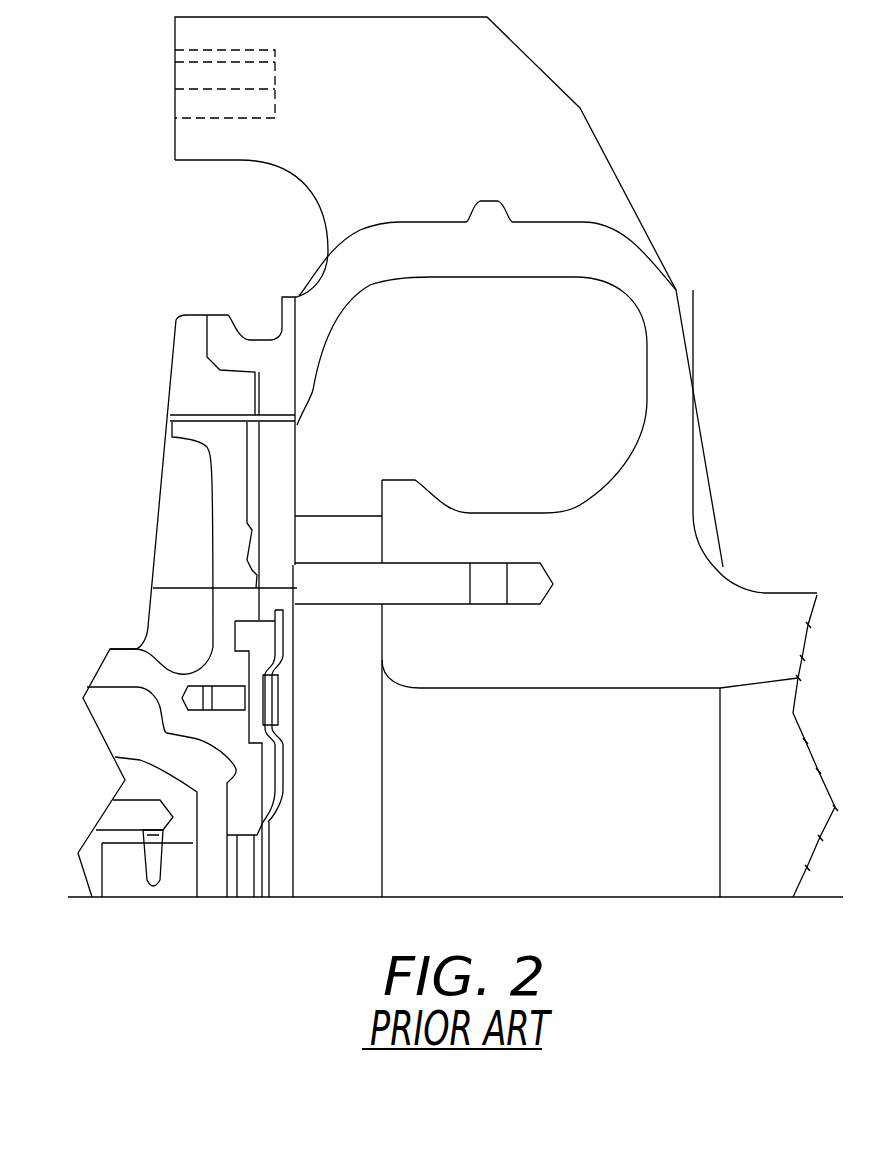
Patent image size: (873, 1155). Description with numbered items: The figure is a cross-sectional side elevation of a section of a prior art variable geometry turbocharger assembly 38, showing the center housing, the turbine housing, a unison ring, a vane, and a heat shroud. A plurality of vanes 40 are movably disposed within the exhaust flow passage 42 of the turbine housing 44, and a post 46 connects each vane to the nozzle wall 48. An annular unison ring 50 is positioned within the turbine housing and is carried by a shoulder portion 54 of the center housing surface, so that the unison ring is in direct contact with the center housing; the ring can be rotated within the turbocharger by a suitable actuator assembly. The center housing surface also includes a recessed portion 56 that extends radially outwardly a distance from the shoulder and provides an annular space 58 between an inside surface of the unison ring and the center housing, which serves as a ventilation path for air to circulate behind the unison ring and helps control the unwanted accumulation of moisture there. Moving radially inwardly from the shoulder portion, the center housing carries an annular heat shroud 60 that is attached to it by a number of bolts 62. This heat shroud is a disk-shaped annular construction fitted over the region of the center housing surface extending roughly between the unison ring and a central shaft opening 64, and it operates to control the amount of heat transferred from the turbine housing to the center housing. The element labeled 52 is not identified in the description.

The variable geometry turbocharger assembly 38 is at (705, 183).
The vane 40 is at (343, 540).
The exhaust flow passage 42 is at (345, 437).
The turbine housing 44 is at (665, 458).
The post 46 is at (408, 582).
The nozzle wall 48 is at (383, 640).
The unison ring 50 is at (268, 463).
The plate 52 is at (183, 413).
The shoulder portion 54 is at (256, 576).
The recessed portion 56 is at (248, 533).
The annular space 58 is at (250, 493).
The heat shroud 60 is at (277, 790).
The bolt 62 is at (266, 693).
The central shaft opening 64 is at (263, 822).